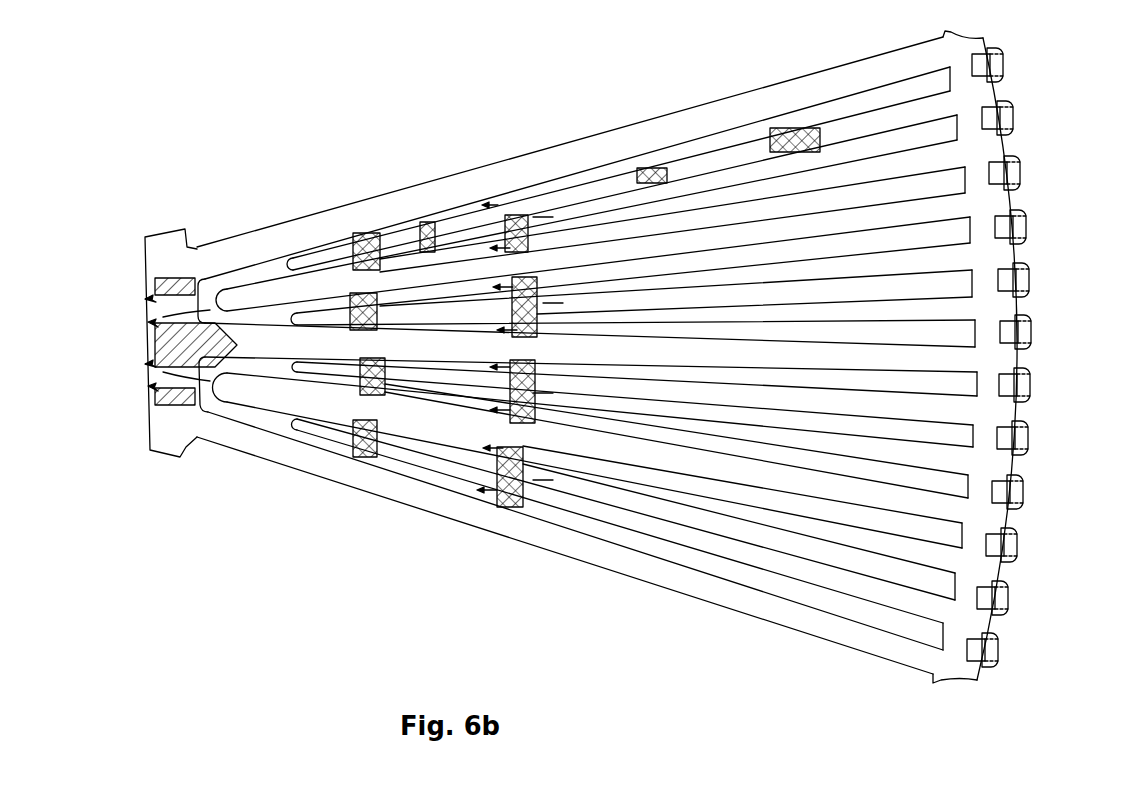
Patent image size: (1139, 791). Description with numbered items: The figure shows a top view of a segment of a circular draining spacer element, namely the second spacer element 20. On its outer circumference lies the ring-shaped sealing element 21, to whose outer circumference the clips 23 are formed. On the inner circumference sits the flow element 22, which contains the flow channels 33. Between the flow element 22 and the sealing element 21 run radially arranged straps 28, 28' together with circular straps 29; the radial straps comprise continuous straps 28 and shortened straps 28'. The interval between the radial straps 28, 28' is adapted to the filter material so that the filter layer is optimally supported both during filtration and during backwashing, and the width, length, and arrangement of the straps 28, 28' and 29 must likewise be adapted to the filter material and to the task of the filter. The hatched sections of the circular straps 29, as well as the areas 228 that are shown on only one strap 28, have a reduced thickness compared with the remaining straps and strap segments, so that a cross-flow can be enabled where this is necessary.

The second spacer element 20 is at (421, 518).
The sealing element 21 is at (948, 682).
The flow element 22 is at (173, 246).
The clips 23 is at (1003, 66).
The continuous straps 28 is at (587, 373).
The shortened straps 28' is at (624, 529).
The circular straps 29 is at (360, 457).
The flow channels 33 is at (150, 300).
The areas of reduced thickness 228 is at (797, 128).